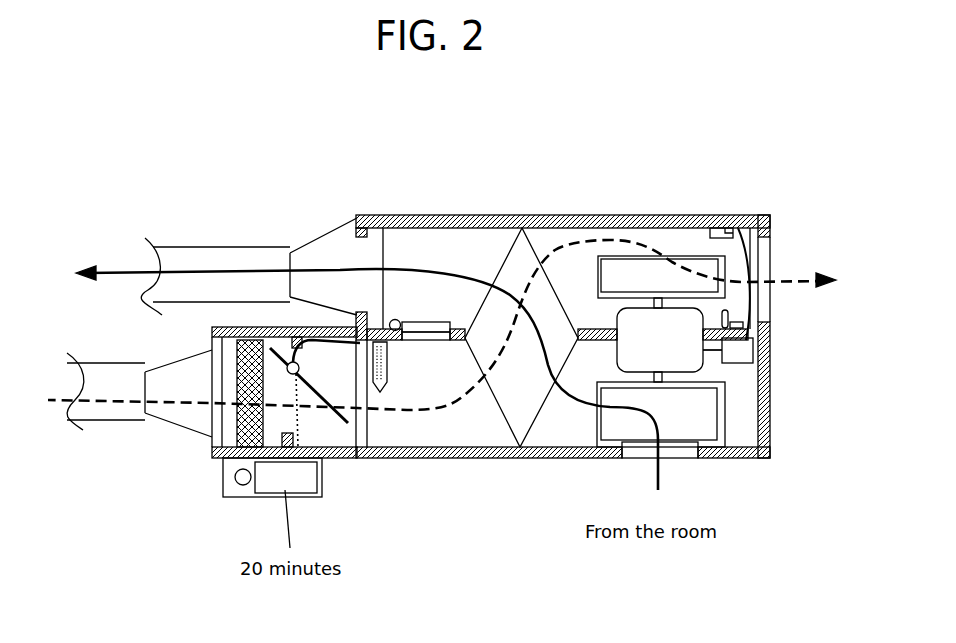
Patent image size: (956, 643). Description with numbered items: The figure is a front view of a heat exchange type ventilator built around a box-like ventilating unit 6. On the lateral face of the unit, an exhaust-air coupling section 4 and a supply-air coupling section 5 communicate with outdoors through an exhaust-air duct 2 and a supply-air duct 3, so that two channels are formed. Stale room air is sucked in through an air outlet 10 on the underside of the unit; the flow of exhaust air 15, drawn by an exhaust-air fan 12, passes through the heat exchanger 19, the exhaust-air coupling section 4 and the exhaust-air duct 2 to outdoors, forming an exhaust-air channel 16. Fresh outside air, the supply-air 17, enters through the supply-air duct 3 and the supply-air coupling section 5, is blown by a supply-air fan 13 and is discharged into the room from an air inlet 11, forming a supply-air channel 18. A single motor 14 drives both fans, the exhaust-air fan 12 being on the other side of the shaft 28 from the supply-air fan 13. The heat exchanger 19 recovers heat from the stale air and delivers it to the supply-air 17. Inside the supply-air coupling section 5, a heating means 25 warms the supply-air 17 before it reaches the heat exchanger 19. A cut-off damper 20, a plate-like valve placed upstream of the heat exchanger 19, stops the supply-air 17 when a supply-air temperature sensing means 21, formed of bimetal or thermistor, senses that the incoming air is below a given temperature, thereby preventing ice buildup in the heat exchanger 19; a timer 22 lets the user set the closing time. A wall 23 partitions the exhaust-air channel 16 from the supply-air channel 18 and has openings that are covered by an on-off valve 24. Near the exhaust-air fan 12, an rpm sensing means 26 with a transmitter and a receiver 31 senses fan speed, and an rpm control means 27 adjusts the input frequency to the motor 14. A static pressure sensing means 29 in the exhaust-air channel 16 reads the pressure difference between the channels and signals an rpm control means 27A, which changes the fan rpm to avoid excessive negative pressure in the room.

The exhaust-air duct 2 is at (215, 247).
The supply-air duct 3 is at (108, 413).
The exhaust-air coupling section 4 is at (338, 247).
The supply-air coupling section 5 is at (195, 415).
The ventilating unit 6 is at (475, 215).
The air outlet 10 is at (677, 453).
The air inlet 11 is at (770, 255).
The exhaust-air fan 12 is at (773, 447).
The supply-air fan 13 is at (628, 257).
The motor 14 is at (688, 328).
The exhaust air 15 is at (117, 270).
The exhaust-air channel 16 is at (477, 253).
The supply-air 17 is at (558, 247).
The supply-air channel 18 is at (458, 427).
The heat exchanger 19 is at (523, 387).
The cut-off damper 20 is at (318, 398).
The supply-air temperature sensing means 21 is at (380, 380).
The timer 22 is at (225, 478).
The wall 23 is at (383, 228).
The on-off valve 24 is at (423, 322).
The heating means 25 is at (237, 372).
The rpm sensing means 26 is at (745, 320).
The rpm control means 27 is at (737, 347).
The rpm control means 27A is at (775, 392).
The shaft 28 is at (660, 300).
The static pressure sensing means 29 is at (780, 320).
The receiver 31 is at (720, 232).